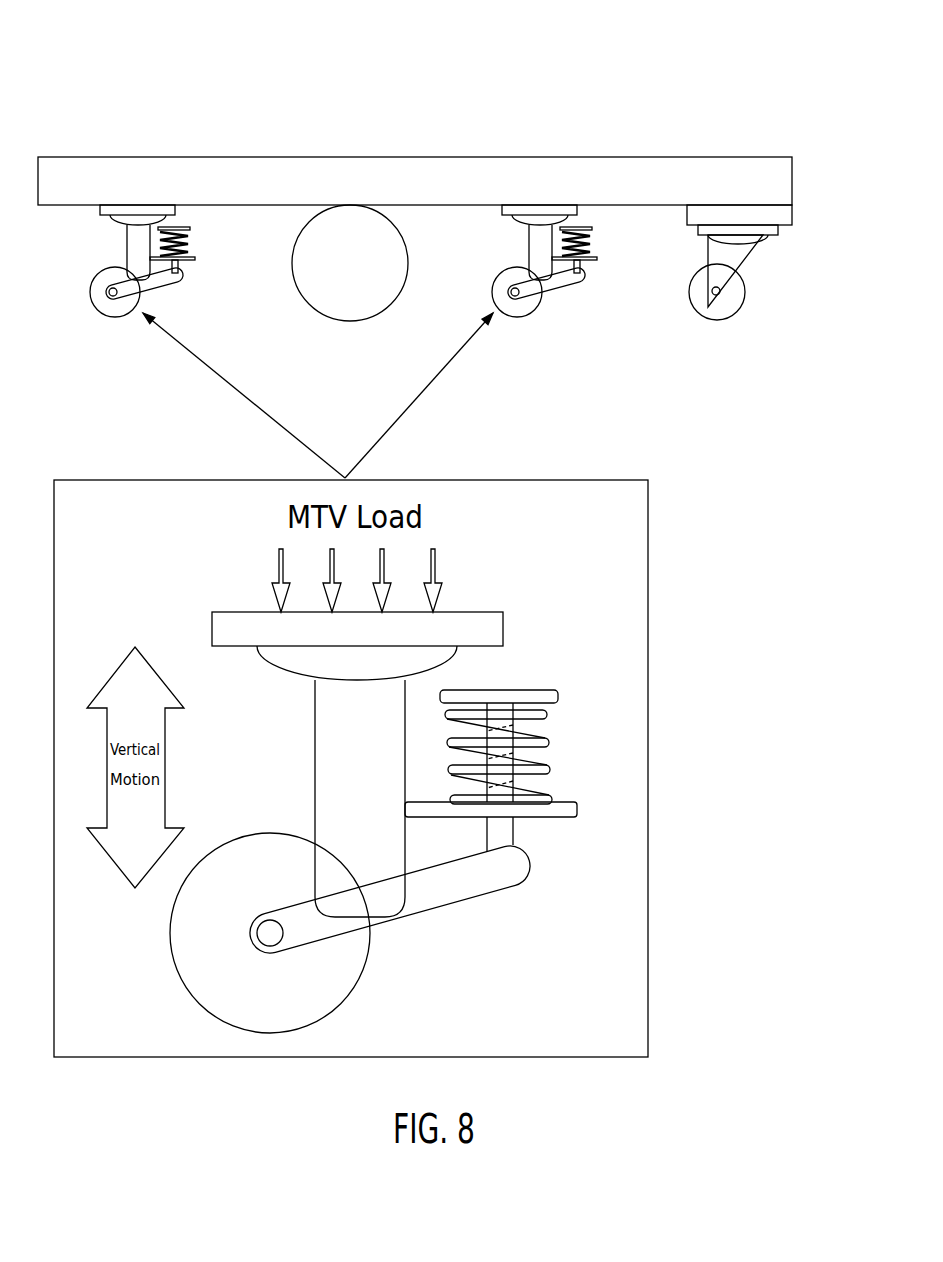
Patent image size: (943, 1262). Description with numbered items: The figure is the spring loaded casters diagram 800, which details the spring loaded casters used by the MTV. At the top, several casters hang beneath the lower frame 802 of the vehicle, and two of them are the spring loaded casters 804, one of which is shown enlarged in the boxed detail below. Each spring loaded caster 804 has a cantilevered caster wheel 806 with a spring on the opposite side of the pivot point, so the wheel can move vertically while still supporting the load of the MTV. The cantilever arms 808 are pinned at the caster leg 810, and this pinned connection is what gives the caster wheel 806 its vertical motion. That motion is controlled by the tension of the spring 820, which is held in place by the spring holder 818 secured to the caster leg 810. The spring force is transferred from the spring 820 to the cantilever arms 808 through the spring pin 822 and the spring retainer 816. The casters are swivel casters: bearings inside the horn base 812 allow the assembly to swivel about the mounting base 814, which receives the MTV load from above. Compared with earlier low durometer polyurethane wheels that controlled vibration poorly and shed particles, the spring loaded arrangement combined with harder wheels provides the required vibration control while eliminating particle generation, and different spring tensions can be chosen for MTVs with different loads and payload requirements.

The spring loaded casters diagram 800 is at (160, 72).
The lower frame 802 is at (741, 157).
The spring loaded caster 804 is at (102, 315).
The caster wheel 806 is at (366, 274).
The cantilever arms 808 is at (740, 305).
The caster leg 810 is at (373, 768).
The horn base 812 is at (373, 676).
The mounting base 814 is at (373, 641).
The spring retainer 816 is at (560, 697).
The spring holder 818 is at (577, 810).
The spring 820 is at (549, 742).
The spring pin 822 is at (513, 843).